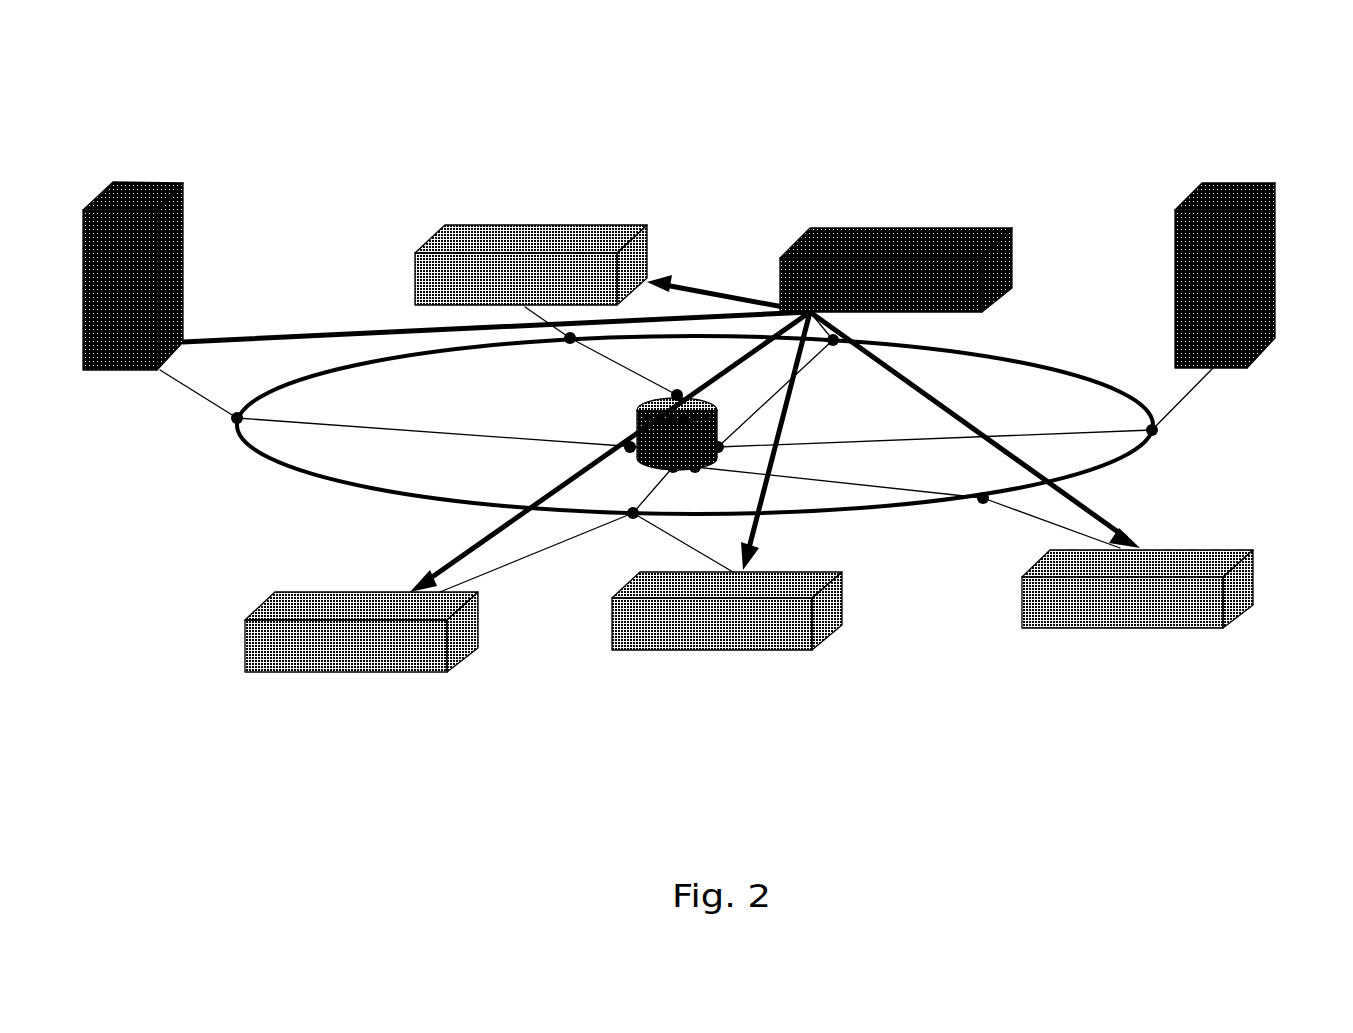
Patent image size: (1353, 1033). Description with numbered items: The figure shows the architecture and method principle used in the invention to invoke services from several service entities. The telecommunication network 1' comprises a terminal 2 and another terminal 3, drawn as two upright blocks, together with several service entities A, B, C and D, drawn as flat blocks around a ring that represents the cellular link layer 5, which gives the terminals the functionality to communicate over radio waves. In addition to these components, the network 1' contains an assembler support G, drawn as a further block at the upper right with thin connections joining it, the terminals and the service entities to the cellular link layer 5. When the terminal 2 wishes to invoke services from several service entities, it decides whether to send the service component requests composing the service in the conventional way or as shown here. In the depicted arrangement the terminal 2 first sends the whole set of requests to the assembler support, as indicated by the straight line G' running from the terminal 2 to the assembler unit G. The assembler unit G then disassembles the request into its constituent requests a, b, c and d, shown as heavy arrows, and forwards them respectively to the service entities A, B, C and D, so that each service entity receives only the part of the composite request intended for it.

The telecommunication network 1' is at (920, 56).
The terminal 2 is at (178, 233).
The another terminal 3 is at (1270, 250).
The cellular link layer 5 is at (330, 473).
The service entity A is at (248, 644).
The service entity B is at (725, 650).
The service entity C is at (1255, 578).
The service entity D is at (636, 266).
The assembler support G is at (937, 270).
The straight line G' is at (496, 292).
The constituent request a is at (722, 376).
The constituent request b is at (793, 410).
The constituent request c is at (967, 413).
The constituent request d is at (749, 292).